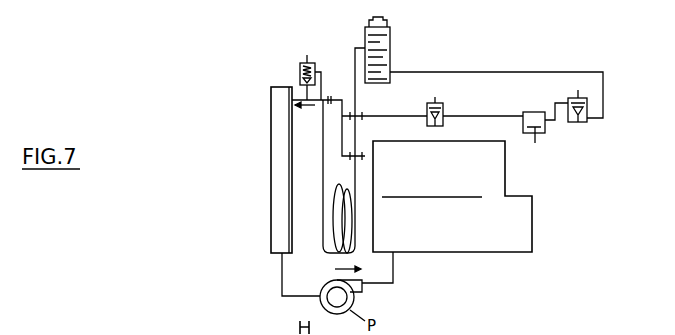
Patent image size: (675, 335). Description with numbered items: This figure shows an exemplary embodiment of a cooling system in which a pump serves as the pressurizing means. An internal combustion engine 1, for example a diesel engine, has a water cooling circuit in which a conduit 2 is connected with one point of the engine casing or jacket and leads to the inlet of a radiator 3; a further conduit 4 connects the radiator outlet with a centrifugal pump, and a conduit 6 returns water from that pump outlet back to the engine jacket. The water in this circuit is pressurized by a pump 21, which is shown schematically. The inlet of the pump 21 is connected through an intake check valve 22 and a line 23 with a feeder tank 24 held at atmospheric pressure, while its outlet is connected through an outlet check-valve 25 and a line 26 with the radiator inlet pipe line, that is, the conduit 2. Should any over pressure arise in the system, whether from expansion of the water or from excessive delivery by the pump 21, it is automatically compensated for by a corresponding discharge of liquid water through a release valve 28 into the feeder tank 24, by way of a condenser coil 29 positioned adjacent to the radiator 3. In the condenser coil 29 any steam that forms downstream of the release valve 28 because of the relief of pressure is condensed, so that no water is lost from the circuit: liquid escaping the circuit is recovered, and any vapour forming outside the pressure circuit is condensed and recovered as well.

The internal combustion engine 1 is at (528, 235).
The conduit 2 is at (341, 135).
The radiator 3 is at (277, 151).
The conduit 4 is at (282, 283).
The conduit 6 is at (393, 272).
The pump 21 is at (538, 142).
The intake check valve 22 is at (588, 121).
The line 23 is at (470, 72).
The feeder tank 24 is at (390, 55).
The outlet check-valve 25 is at (446, 113).
The line 26 is at (378, 116).
The release valve 28 is at (307, 57).
The condenser coil 29 is at (334, 208).